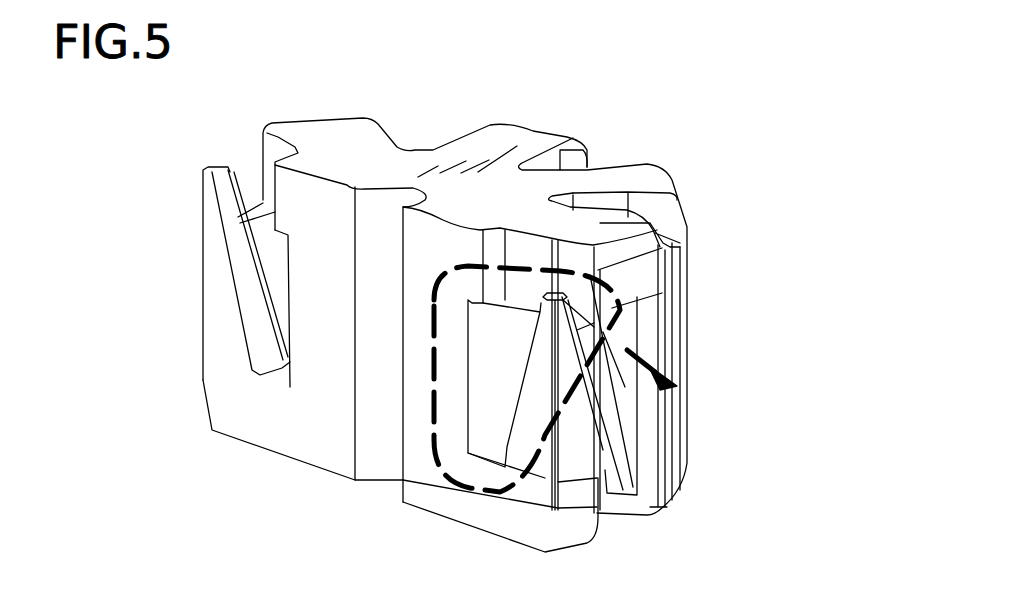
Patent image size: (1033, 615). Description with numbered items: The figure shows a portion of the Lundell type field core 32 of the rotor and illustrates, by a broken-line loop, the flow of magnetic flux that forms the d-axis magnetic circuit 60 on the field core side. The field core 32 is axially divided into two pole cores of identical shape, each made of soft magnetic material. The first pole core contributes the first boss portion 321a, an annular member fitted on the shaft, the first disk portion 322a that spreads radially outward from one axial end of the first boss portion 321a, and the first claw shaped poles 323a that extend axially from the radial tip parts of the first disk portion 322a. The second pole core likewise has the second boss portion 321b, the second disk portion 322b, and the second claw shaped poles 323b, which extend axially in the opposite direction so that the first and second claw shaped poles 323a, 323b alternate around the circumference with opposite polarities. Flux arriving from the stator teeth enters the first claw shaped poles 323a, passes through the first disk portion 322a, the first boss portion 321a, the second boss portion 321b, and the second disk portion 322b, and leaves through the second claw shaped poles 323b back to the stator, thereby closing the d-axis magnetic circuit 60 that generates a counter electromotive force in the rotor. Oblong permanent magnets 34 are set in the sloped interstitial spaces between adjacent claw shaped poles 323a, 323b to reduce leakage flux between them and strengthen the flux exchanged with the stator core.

The field core 32 is at (647, 133).
The permanent magnet 34 is at (277, 262).
The d-axis magnetic circuit 60 is at (427, 400).
The first boss portion 321a is at (423, 440).
The second boss portion 321b is at (413, 340).
The first disk portion 322a is at (477, 507).
The second disk portion 322b is at (546, 290).
The first claw shaped pole 323a is at (572, 417).
The second claw shaped pole 323b is at (647, 327).